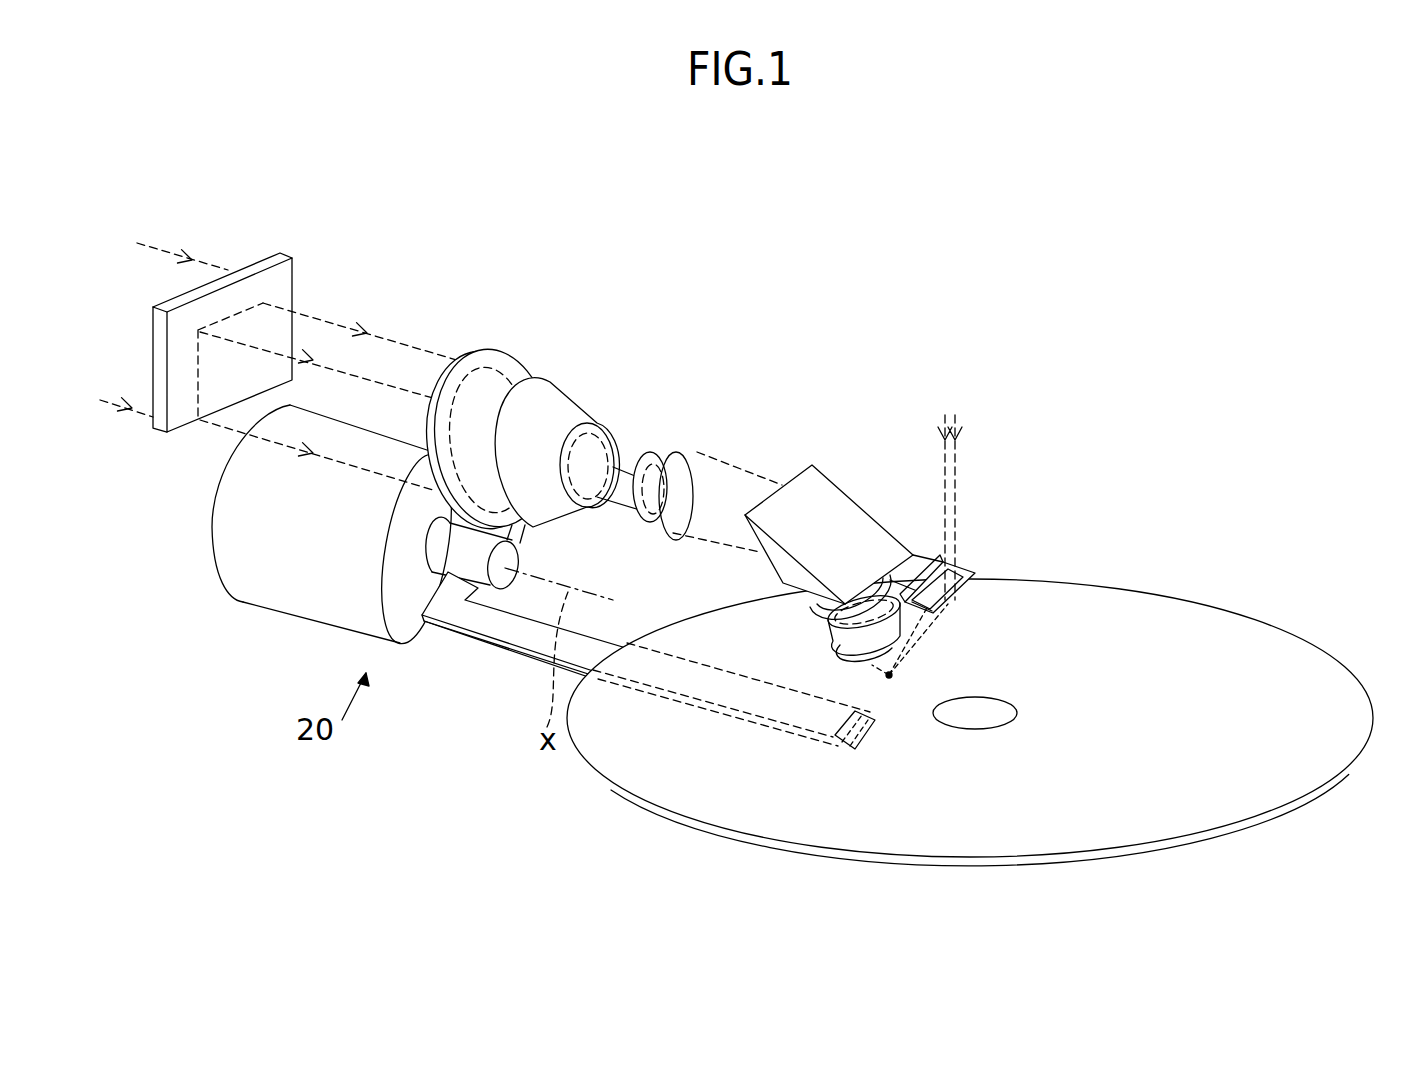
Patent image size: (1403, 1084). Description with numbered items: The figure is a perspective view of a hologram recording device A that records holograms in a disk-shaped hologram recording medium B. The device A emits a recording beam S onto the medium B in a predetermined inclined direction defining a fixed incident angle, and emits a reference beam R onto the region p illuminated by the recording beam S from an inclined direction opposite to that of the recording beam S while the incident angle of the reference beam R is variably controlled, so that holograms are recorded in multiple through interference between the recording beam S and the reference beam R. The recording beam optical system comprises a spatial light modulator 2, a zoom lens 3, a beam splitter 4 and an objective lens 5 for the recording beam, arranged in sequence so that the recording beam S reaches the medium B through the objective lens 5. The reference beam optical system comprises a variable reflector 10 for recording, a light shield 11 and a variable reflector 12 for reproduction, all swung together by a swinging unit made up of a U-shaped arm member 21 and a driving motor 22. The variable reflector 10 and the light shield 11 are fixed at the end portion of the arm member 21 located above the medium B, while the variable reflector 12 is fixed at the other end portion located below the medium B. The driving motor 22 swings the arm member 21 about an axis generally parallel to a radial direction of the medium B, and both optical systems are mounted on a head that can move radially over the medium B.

The spatial light modulator 2 is at (273, 260).
The zoom lens 3 is at (647, 457).
The beam splitter 4 is at (840, 490).
The objective lens for the recording beam 5 is at (857, 647).
The variable reflector for recording 10 is at (973, 560).
The light shield 11 is at (970, 620).
The variable reflector for reproduction 12 is at (832, 745).
The arm member 21 is at (465, 638).
The driving motor 22 is at (268, 605).
The hologram recording device A is at (738, 312).
The hologram recording medium B is at (1222, 608).
The reference beam R is at (960, 465).
The recording beam S is at (733, 463).
The region illuminated by the recording beam p is at (893, 675).